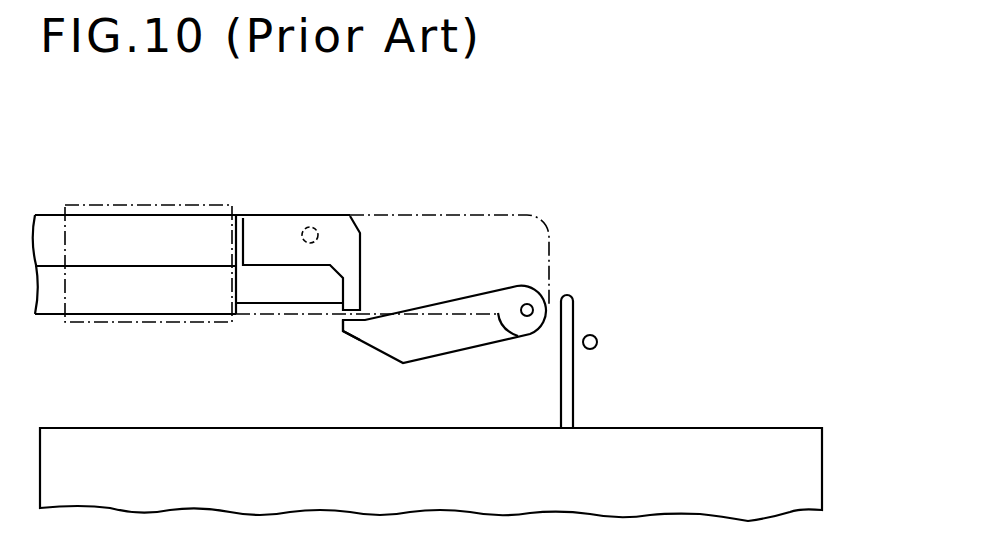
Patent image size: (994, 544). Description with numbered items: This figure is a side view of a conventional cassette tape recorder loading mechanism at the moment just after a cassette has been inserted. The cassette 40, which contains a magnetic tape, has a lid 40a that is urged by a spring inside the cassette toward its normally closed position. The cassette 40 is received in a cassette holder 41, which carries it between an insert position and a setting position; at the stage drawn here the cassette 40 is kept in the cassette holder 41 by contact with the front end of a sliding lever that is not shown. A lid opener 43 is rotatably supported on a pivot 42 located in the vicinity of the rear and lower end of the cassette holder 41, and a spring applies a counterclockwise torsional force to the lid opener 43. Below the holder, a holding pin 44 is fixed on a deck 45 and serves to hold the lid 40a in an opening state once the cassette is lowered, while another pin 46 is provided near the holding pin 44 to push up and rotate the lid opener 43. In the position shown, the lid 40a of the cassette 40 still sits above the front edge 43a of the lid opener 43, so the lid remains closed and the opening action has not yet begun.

The cassette 40 is at (160, 225).
The lid 40a is at (283, 230).
The cassette holder 41 is at (508, 237).
The pivot 42 is at (522, 320).
The lid opener 43 is at (437, 340).
The front edge 43a is at (353, 330).
The holding pin 44 is at (567, 410).
The deck 45 is at (725, 436).
The pin 46 is at (598, 338).